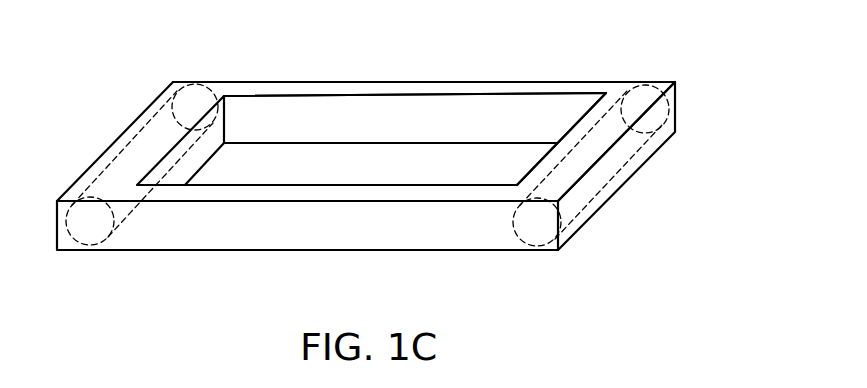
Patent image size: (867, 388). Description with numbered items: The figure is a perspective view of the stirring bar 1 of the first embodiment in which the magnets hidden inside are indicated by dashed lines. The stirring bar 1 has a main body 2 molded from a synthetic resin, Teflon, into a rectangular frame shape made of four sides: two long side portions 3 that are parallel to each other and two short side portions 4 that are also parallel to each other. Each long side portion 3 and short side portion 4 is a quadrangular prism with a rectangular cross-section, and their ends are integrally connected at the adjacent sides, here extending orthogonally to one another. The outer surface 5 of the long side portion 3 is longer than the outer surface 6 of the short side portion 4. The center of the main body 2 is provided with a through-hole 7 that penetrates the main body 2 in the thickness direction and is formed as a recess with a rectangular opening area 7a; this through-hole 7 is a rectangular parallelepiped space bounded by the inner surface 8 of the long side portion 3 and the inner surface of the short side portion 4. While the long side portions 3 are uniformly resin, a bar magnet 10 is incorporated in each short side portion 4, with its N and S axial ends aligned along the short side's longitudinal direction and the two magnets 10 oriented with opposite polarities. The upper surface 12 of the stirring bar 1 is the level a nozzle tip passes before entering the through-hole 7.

The stirring bar 1 is at (358, 64).
The main body 2 is at (192, 97).
The long side portion 3 is at (395, 90).
The short side portion 4 is at (115, 162).
The outer surface 5 is at (270, 223).
The outer surface 6 is at (600, 183).
The through-hole 7 is at (317, 153).
The opening area 7a is at (460, 125).
The inner surface 8 is at (532, 125).
The bar magnet 10 is at (147, 112).
The upper surface 12 is at (615, 88).